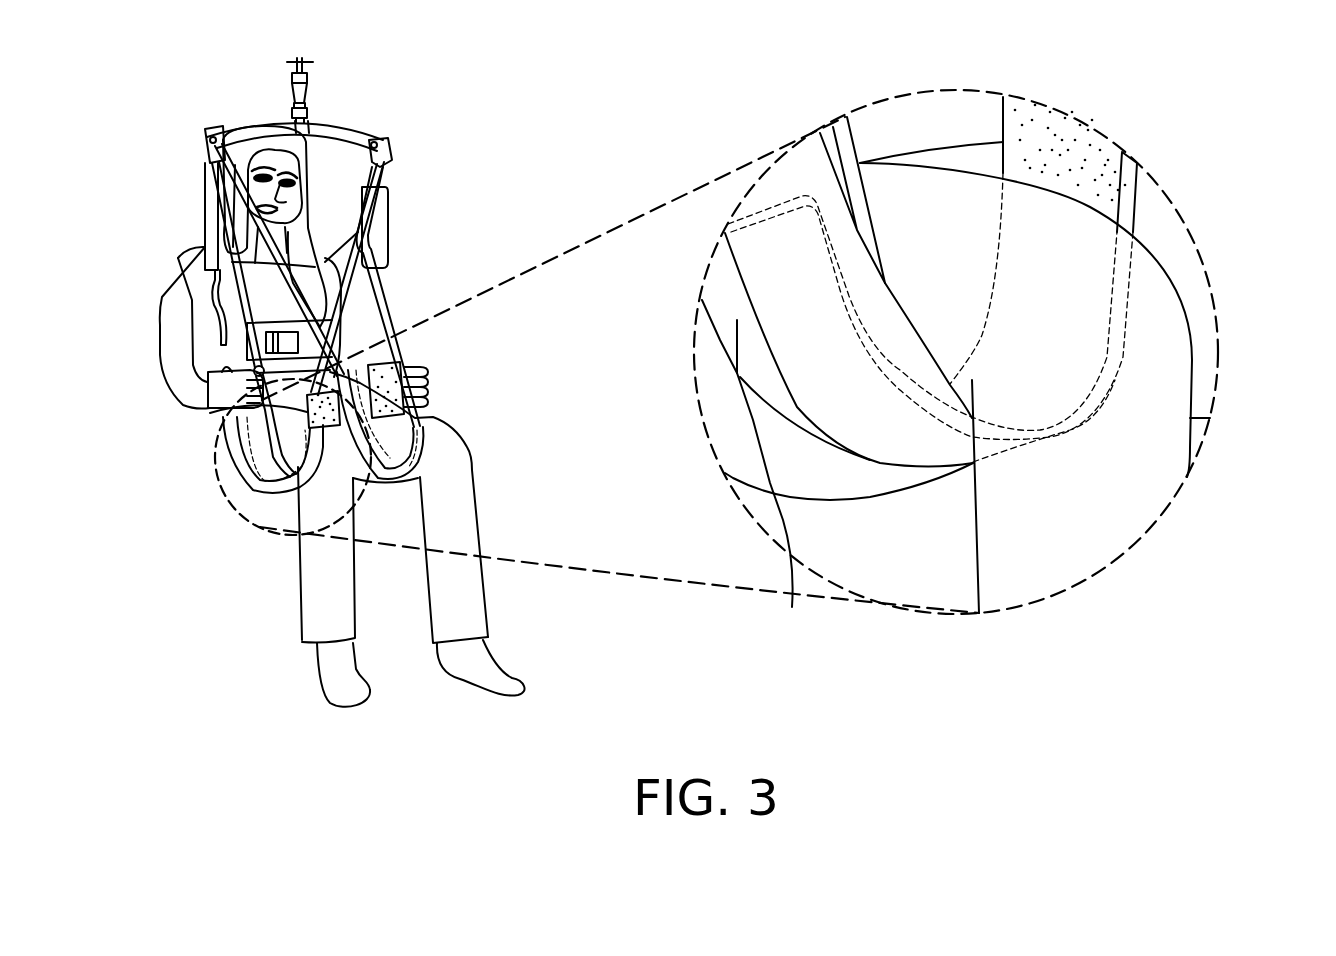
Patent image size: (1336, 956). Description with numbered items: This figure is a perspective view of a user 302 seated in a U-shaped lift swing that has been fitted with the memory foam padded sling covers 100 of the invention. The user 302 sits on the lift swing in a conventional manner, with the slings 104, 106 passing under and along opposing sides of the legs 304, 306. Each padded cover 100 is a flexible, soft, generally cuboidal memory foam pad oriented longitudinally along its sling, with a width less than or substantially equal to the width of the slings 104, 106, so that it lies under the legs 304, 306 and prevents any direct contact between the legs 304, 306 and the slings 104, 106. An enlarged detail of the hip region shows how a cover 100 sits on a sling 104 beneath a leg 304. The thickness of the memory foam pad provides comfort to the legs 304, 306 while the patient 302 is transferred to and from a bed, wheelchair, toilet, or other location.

The padded sling cover 100 is at (1075, 160).
The sling 104 is at (235, 313).
The sling 106 is at (362, 302).
The user 302 is at (288, 167).
The leg 304 is at (315, 577).
The leg 306 is at (460, 532).